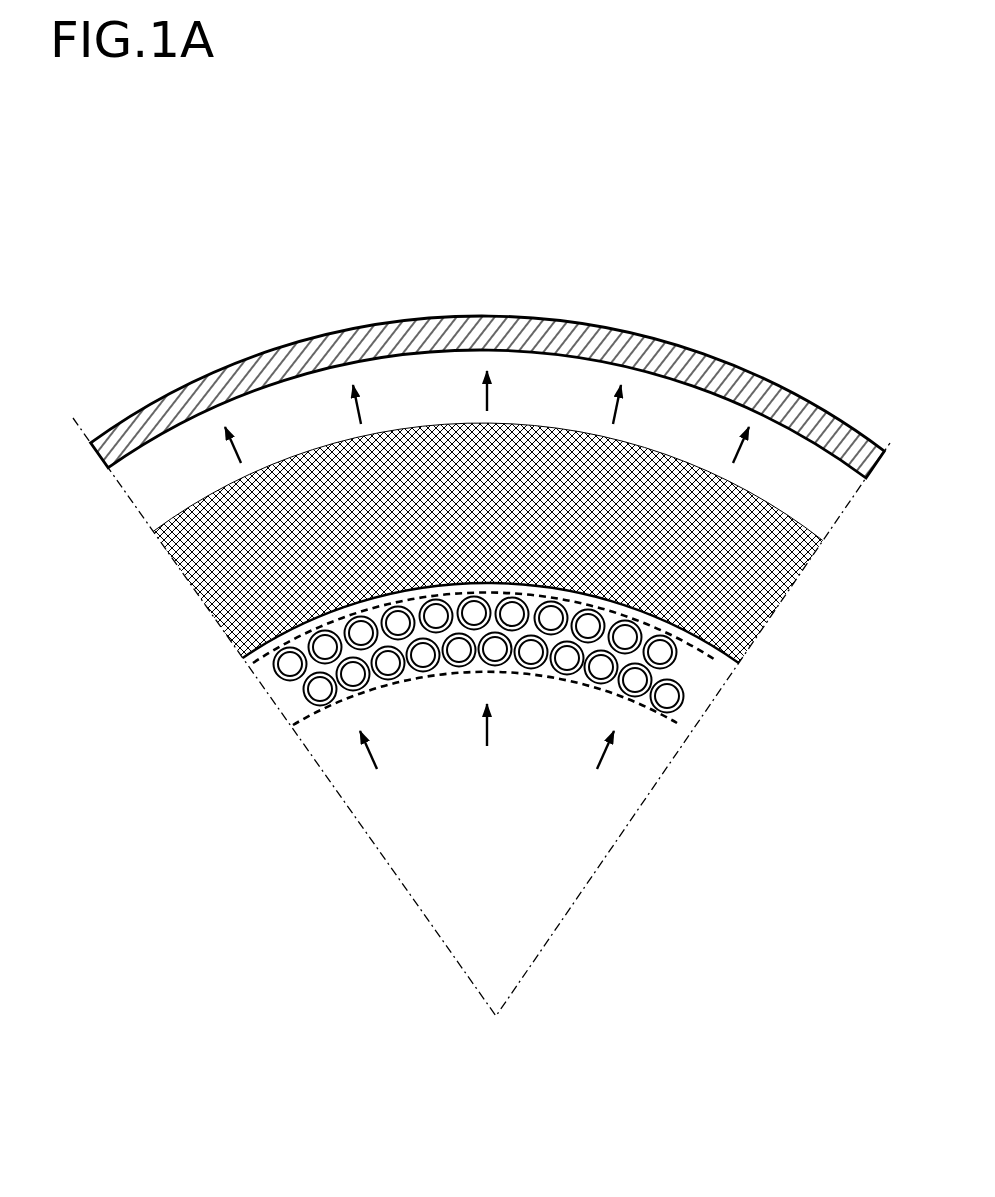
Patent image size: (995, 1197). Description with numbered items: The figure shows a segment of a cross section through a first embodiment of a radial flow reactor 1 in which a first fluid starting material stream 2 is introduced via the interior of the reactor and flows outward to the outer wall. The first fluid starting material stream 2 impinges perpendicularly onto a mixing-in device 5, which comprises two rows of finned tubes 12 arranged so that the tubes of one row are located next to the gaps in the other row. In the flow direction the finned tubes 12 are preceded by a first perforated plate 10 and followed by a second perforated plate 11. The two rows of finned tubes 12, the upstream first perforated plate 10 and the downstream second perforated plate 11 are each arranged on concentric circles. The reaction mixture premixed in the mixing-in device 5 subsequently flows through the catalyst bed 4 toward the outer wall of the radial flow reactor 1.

The radial flow reactor 1 is at (362, 310).
The first fluid starting material stream 2 is at (345, 746).
The catalyst bed 4 is at (192, 562).
The mixing-in device 5 is at (514, 672).
The first perforated plate 10 is at (678, 725).
The second perforated plate 11 is at (722, 668).
The finned tubes 12 is at (688, 702).